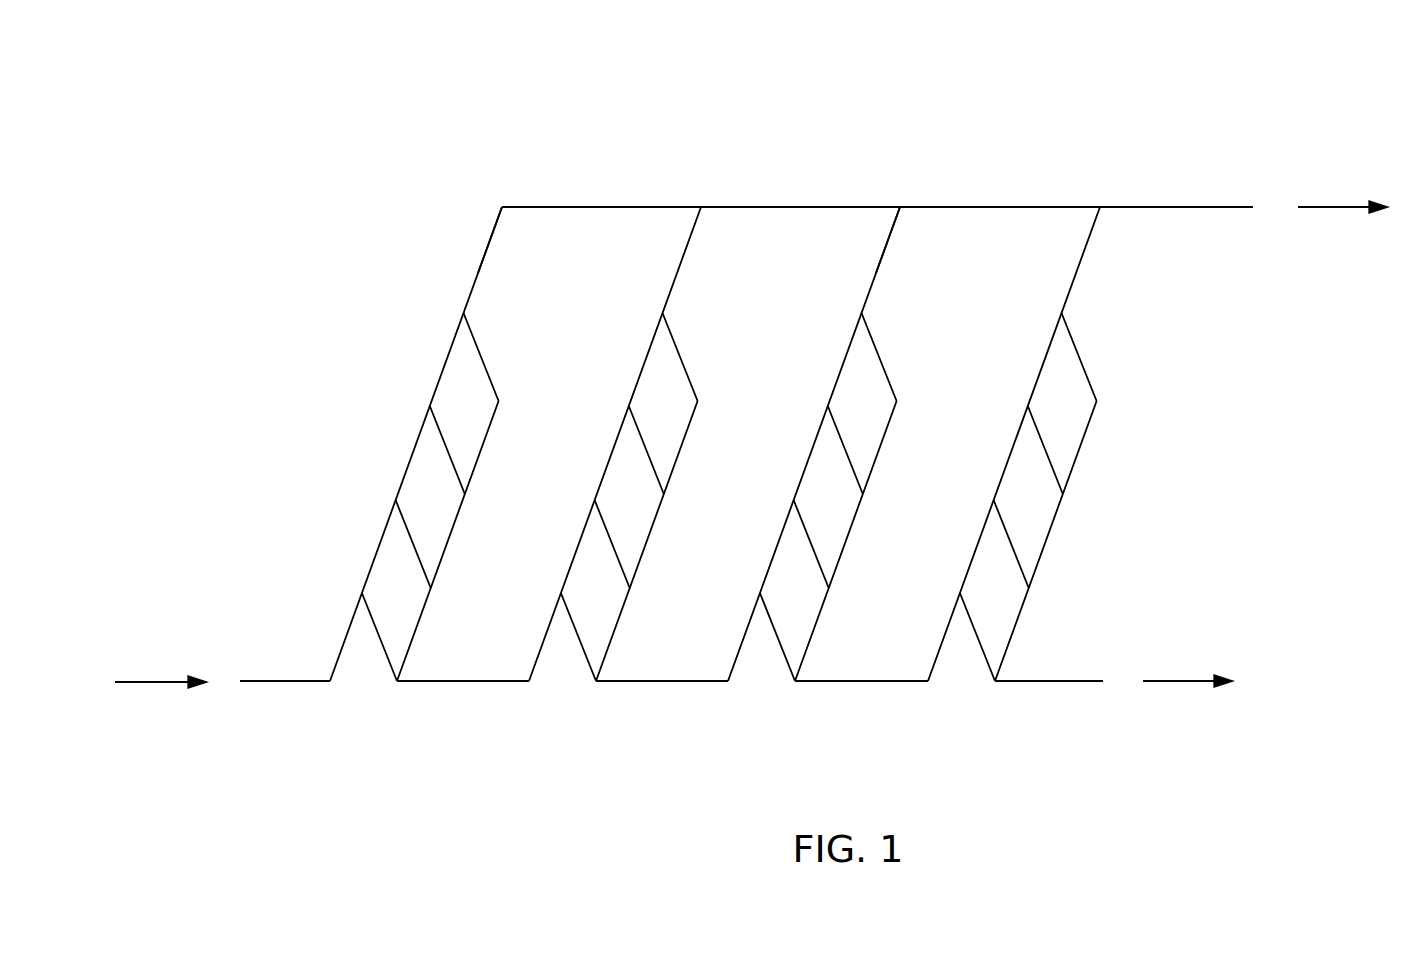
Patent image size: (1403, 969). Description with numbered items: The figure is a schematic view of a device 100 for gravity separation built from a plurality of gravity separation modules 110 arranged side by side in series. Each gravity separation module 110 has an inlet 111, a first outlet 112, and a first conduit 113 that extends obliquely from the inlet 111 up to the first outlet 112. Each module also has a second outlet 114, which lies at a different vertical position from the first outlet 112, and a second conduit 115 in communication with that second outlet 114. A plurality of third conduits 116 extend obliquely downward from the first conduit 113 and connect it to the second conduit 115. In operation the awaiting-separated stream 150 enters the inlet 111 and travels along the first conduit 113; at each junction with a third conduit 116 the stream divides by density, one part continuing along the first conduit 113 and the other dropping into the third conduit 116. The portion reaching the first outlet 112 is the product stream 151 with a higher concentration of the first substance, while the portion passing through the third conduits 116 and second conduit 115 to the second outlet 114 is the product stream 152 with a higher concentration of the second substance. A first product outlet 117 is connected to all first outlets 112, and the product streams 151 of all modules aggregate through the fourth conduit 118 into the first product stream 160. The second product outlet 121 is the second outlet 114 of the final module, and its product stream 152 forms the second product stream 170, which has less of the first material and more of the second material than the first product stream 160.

The device for gravity separation 100 is at (1256, 86).
The gravity separation module 110 is at (386, 354).
The inlet 111 is at (284, 681).
The first outlet 112 is at (487, 258).
The first conduit 113 is at (418, 437).
The second outlet 114 is at (471, 681).
The second conduit 115 is at (452, 541).
The third conduit 116 is at (682, 355).
The first product outlet 117 is at (1178, 207).
The fourth conduit 118 is at (793, 207).
The second product outlet 121 is at (1048, 681).
The awaiting-separated stream 150 is at (161, 681).
The product stream containing higher concentration of first substance 151 is at (497, 240).
The product stream containing higher concentration of second substance 152 is at (483, 355).
The first product stream 160 is at (1344, 207).
The second product stream 170 is at (1188, 681).